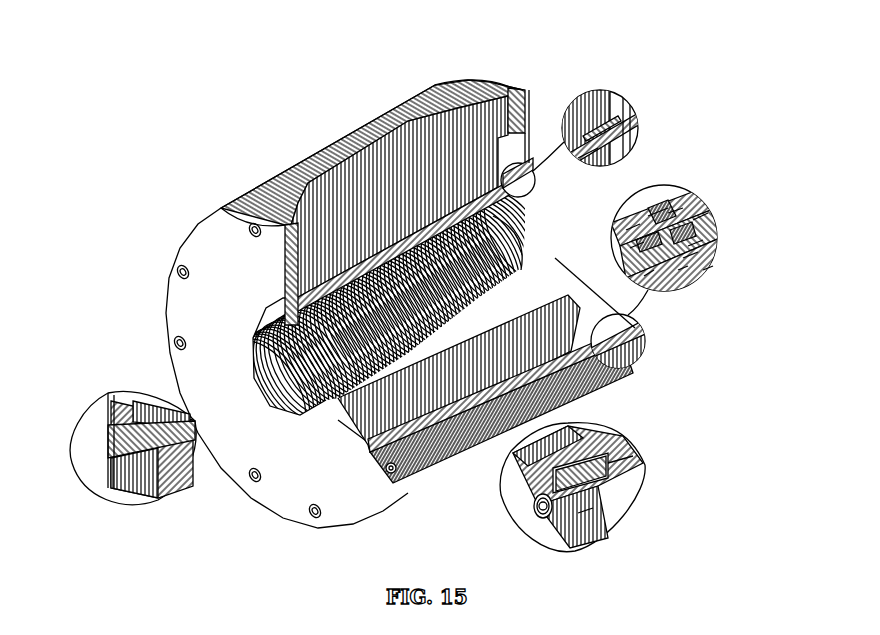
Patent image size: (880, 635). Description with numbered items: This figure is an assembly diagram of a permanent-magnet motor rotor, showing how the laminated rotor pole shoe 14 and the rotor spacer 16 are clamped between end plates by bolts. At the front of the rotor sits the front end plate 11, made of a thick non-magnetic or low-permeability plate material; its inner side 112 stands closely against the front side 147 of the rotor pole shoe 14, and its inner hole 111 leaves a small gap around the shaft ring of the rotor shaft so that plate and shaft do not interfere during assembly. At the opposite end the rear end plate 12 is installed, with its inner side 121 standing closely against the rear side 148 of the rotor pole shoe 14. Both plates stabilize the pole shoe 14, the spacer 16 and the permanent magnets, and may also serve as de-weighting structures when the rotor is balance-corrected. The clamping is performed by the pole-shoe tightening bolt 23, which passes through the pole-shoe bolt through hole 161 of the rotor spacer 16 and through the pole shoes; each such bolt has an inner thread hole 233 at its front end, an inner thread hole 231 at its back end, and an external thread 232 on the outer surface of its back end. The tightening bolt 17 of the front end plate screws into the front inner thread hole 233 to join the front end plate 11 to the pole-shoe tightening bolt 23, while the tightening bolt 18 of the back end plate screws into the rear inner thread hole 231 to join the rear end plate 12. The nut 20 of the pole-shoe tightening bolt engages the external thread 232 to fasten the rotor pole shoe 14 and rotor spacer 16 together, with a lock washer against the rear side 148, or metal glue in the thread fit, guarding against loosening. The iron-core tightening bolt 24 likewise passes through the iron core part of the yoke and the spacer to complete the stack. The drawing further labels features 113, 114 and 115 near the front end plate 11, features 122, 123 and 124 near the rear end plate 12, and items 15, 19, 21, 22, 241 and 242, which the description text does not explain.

The front end plate 11 is at (203, 220).
The inner hole of the front end plate 111 is at (257, 378).
The inner side of the front end plate 112 is at (608, 485).
The through hole 113 is at (300, 503).
The hole wall 114 is at (533, 505).
The step of end plate 115 is at (576, 505).
The rear end plate 12 is at (487, 74).
The inner side of the back end plate 121 is at (487, 78).
The central opening of second end plate 122 is at (495, 242).
The groove of second end plate 123 is at (685, 236).
The slot of second end plate 124 is at (690, 210).
The rotor pole shoe 14 is at (670, 262).
The front side of the rotor pole shoe 147 is at (390, 470).
The rear side of the rotor pole shoe 148 is at (700, 262).
The heat pipe 15 is at (575, 128).
The rotor spacer 16 is at (640, 266).
The pole-shoe bolt through hole 161 is at (675, 260).
The tightening bolt of the front end plate 17 is at (240, 218).
The tightening bolt of the back end plate 18 is at (668, 205).
The fin 19 is at (597, 92).
The nut of the pole-shoe tightening bolt 20 is at (640, 208).
The fin edge 21 is at (590, 105).
The gasket 22 is at (680, 248).
The pole-shoe tightening bolt 23 is at (640, 252).
The inner thread hole at the back end of the pole-shoe tightening bolt 231 is at (625, 238).
The external thread of the pole-shoe tightening bolt 232 is at (620, 220).
The inner thread hole at the front end of the pole-shoe tightening bolt 233 is at (625, 458).
The iron-core tightening bolt 24 is at (573, 150).
The sleeve flange 241 is at (573, 153).
The sleeve end 242 is at (170, 480).